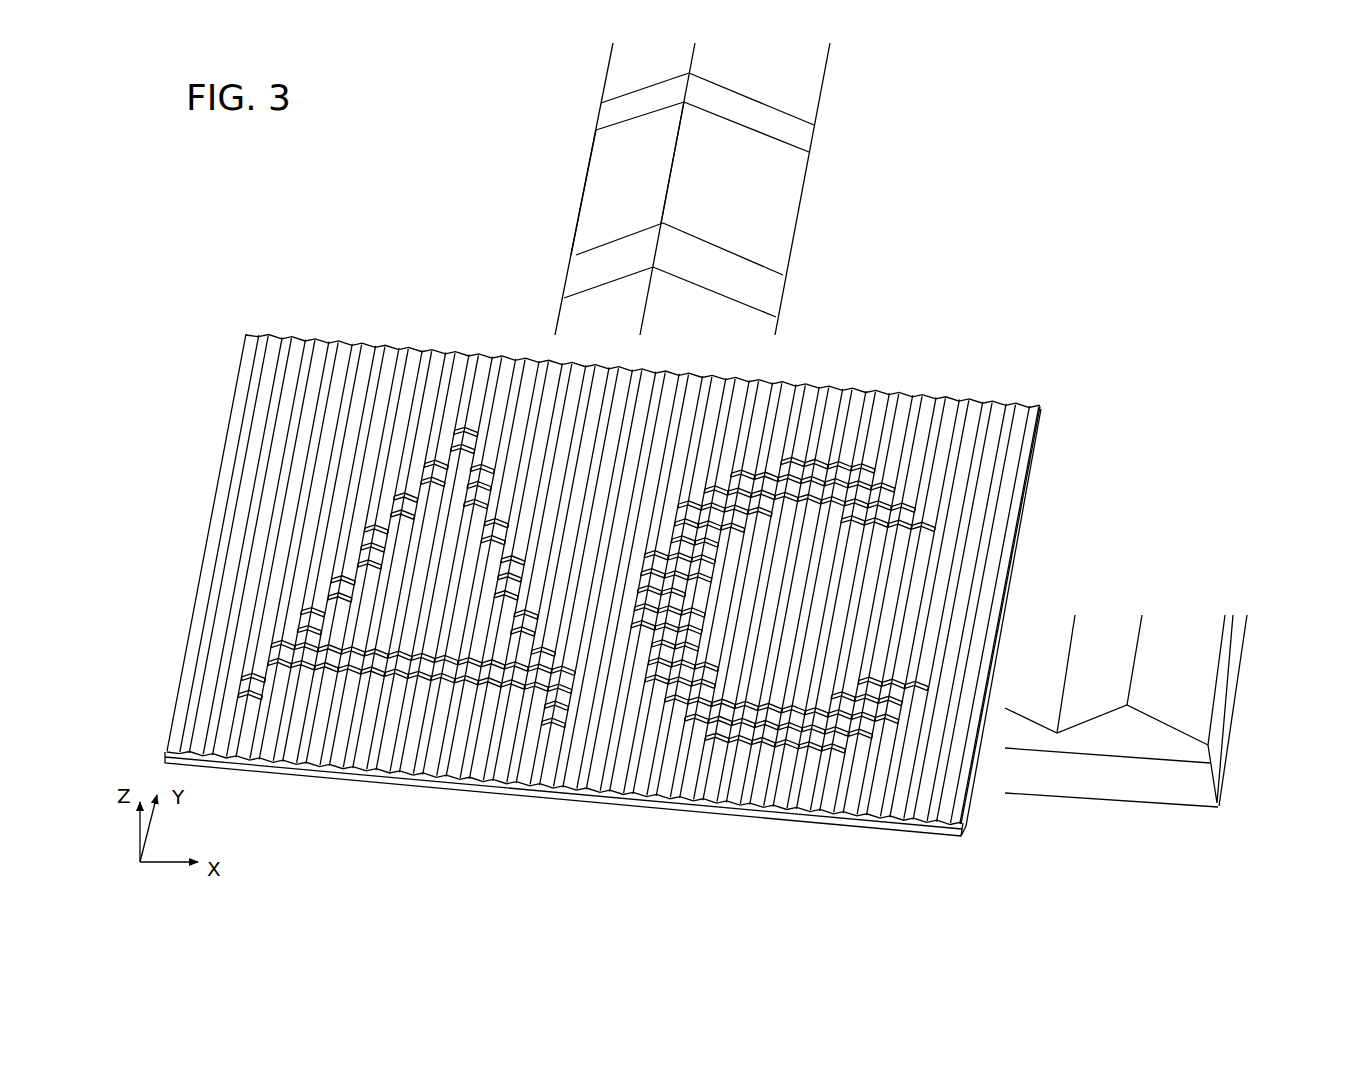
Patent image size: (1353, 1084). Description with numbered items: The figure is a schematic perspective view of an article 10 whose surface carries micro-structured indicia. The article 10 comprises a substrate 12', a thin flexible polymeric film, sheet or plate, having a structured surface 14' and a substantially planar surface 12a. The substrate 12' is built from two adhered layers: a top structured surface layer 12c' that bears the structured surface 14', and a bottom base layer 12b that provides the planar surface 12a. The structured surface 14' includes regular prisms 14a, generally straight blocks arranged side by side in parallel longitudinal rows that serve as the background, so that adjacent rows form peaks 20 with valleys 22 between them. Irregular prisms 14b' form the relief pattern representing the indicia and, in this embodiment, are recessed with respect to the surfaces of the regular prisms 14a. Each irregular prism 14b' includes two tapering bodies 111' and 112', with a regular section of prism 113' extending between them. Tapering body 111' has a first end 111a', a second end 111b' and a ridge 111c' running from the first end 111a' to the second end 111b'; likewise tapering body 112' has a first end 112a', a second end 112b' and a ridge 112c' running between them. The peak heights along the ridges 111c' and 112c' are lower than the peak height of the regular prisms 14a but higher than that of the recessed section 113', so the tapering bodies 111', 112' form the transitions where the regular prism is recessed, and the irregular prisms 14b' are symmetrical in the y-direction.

The article 10 is at (658, 551).
The peak 20 is at (658, 551).
The valley 22 is at (976, 428).
The structured surface 14' is at (731, 179).
The regular prism 14a is at (707, 95).
The irregular prism 14b' is at (688, 222).
The tapering body 112' is at (652, 101).
The first end 112a' is at (645, 75).
The second end 112b' is at (640, 135).
The ridge 112c' is at (749, 93).
The regular section of prism 113' is at (578, 178).
The tapering body 111' is at (621, 257).
The first end 111a' is at (620, 219).
The second end 111b' is at (608, 299).
The ridge 111c' is at (718, 258).
The substrate 12' is at (1167, 728).
The planar surface 12a is at (1154, 808).
The base layer 12b is at (1158, 752).
The structured surface layer 12c' is at (1167, 697).